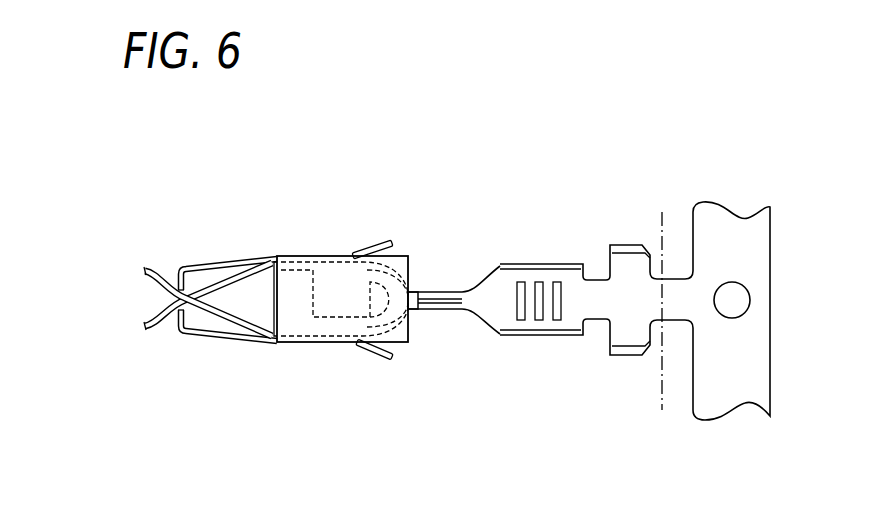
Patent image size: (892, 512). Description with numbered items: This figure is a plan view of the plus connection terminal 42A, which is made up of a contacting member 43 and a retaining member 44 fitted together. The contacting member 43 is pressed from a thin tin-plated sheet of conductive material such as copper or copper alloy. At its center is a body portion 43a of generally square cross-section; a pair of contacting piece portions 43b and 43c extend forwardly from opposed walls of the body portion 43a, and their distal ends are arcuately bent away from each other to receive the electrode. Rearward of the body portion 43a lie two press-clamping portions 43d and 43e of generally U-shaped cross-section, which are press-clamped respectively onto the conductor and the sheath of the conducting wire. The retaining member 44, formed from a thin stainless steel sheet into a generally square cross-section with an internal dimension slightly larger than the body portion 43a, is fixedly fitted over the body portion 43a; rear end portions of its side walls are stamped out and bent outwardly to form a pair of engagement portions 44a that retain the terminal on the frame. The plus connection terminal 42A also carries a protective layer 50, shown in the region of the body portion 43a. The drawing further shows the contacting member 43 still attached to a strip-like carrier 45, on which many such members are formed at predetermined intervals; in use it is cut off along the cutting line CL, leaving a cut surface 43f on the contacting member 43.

The plus connection terminal 42A is at (291, 238).
The contacting member 43 is at (498, 313).
The body portion 43a is at (327, 338).
The contacting piece portion 43b is at (142, 281).
The contacting piece portion 43c is at (142, 323).
The press-clamping portion 43d is at (510, 276).
The press-clamping portion 43e is at (626, 272).
The cut surface 43f is at (663, 295).
The retaining member 44 is at (235, 264).
The engagement portion 44a is at (383, 243).
The carrier 45 is at (765, 243).
The protective layer 50 is at (310, 257).
The cutting line CL is at (660, 368).